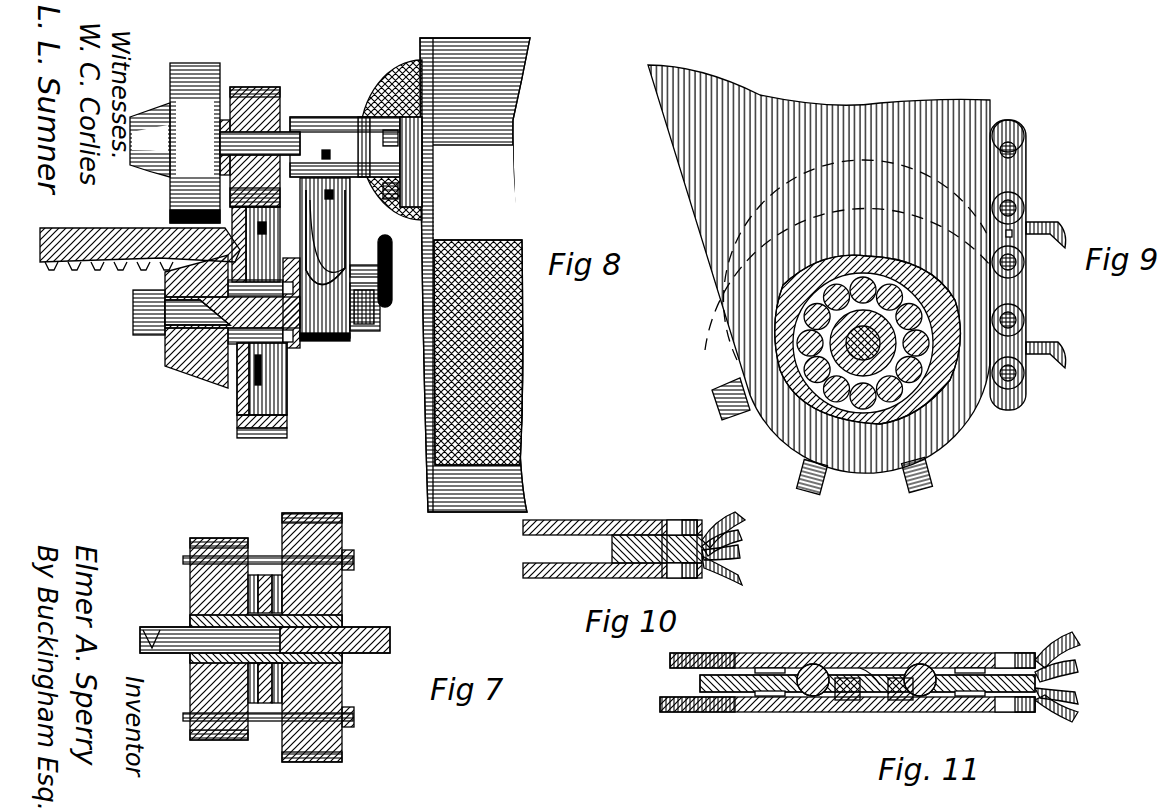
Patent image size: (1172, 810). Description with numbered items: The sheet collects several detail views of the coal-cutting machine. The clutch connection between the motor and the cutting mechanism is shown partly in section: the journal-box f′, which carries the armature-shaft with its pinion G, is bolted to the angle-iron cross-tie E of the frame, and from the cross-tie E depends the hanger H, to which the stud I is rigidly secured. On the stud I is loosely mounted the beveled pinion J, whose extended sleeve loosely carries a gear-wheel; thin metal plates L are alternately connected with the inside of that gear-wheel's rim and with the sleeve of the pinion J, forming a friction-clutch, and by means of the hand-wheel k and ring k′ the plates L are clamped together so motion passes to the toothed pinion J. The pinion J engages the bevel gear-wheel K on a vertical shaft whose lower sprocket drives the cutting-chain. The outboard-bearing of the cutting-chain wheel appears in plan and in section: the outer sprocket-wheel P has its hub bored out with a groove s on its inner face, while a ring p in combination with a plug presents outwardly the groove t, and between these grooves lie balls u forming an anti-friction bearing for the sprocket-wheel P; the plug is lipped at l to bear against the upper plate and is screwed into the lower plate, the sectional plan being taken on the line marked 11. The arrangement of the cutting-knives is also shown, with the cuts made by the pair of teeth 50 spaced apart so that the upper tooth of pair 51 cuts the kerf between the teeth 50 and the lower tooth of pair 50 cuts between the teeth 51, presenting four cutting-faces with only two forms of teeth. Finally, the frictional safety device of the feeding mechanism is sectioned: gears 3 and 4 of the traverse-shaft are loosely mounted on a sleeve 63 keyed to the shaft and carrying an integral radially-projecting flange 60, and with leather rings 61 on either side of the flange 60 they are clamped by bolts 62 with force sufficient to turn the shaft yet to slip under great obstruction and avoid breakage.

In FIG. 8, the frame F is at (475, 275).
In FIG. 8, the cross-tie E is at (378, 190).
In FIG. 8, the journal-box f′ is at (345, 158).
In FIG. 8, the hanger H is at (325, 259).
In FIG. 8, the hand-wheel k is at (377, 283).
In FIG. 8, the pinion G is at (235, 232).
In FIG. 8, the bevel gear-wheel K is at (100, 248).
In FIG. 8, the beveled pinion J is at (196, 321).
In FIG. 8, the stud I is at (216, 312).
In FIG. 8, the ring k′ is at (292, 348).
In FIG. 8, the plates L is at (240, 392).
In FIG. 8, the cap G′ is at (287, 420).
In FIG. 9, the outer sprocket-wheel P is at (868, 339).
In FIG. 11, the outer sprocket-wheel P is at (800, 668).
In FIG. 9, the balls u is at (863, 343).
In FIG. 11, the balls u is at (866, 680).
In FIG. 9, the pivot v is at (863, 343).
In FIG. 11, the pivot v is at (867, 667).
In FIG. 9, the ring p is at (808, 402).
In FIG. 11, the ring p is at (845, 700).
In FIG. 9, the section line 11 is at (760, 343).
In FIG. 7, the gear 3 is at (219, 639).
In FIG. 7, the gear 4 is at (312, 637).
In FIG. 7, the sleeve 63 is at (196, 620).
In FIG. 7, the flange 60 is at (263, 575).
In FIG. 7, the rings 61 is at (253, 690).
In FIG. 7, the bolts 62 is at (186, 558).
In FIG. 10, the teeth 50 is at (740, 516).
In FIG. 10, the teeth 51 is at (742, 534).
In FIG. 11, the groove s is at (830, 668).
In FIG. 11, the groove t is at (855, 668).
In FIG. 11, the lip l is at (822, 665).